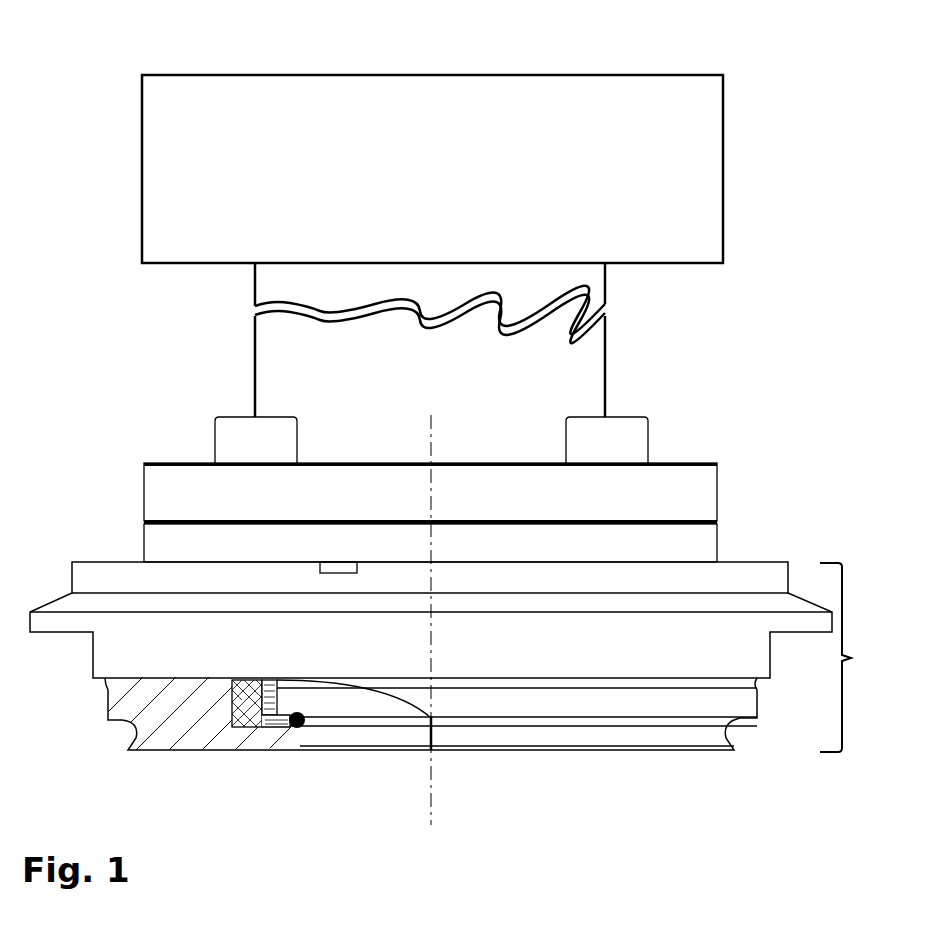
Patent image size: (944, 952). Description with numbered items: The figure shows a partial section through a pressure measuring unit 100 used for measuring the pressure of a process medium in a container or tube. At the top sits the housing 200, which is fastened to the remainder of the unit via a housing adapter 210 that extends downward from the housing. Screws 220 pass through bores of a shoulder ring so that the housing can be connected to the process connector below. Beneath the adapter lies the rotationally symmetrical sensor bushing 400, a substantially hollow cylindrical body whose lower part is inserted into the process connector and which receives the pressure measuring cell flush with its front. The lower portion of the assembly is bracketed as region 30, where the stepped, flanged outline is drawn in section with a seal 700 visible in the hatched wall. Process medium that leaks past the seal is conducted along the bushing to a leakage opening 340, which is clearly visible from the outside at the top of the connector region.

The pressure measuring unit 100 is at (762, 39).
The housing 200 is at (688, 188).
The housing adapter 210 is at (532, 383).
The screws 220 is at (237, 448).
The sensor bushing 400 is at (695, 545).
The housing 30 is at (465, 620).
The leakage opening 340 is at (343, 568).
The seal 700 is at (272, 697).